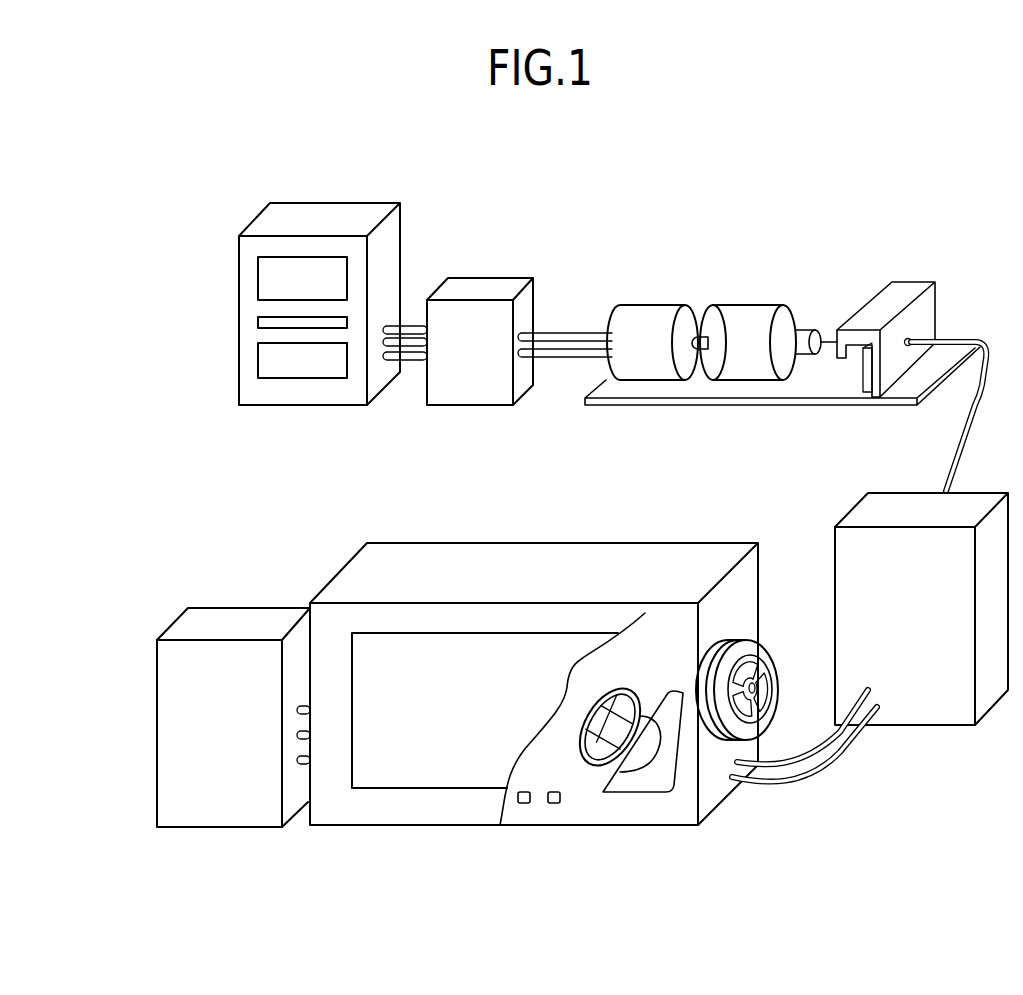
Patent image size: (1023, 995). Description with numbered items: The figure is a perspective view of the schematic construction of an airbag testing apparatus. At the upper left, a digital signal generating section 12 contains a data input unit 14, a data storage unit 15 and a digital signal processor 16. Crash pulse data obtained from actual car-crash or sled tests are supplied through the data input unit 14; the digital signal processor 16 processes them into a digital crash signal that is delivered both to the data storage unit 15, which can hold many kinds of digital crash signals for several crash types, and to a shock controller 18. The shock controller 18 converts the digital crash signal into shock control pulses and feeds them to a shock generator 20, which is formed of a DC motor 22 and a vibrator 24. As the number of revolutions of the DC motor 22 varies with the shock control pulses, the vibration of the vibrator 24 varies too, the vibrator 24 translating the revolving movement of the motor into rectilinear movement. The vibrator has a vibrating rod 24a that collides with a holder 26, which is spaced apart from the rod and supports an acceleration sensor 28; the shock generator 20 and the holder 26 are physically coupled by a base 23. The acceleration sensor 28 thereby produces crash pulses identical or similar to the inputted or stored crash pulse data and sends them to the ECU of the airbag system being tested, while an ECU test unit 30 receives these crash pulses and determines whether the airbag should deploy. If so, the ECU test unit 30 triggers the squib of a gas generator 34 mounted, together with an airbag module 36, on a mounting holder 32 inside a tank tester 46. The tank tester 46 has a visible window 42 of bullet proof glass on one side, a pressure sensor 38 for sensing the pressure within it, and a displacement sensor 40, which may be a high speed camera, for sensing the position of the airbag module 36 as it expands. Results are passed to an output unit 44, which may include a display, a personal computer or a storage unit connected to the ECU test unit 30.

The digital signal generating section 12 is at (296, 408).
The data input unit 14 is at (265, 275).
The data storage unit 15 is at (258, 330).
The digital signal processor 16 is at (265, 372).
The shock controller 18 is at (469, 395).
The shock generator 20 is at (726, 290).
The DC motor 22 is at (645, 317).
The base 23 is at (720, 407).
The vibrator 24 is at (743, 313).
The vibrating rod 24a is at (807, 325).
The holder 26 is at (915, 282).
The acceleration sensor 28 is at (847, 388).
The ECU test unit 30 is at (845, 573).
The mounting holder 32 is at (668, 780).
The gas generator 34 is at (638, 762).
The airbag module 36 is at (600, 735).
The pressure sensor 38 is at (553, 805).
The displacement sensor 40 is at (522, 805).
The visible window 42 is at (437, 773).
The output unit 44 is at (223, 818).
The tank tester 46 is at (567, 552).